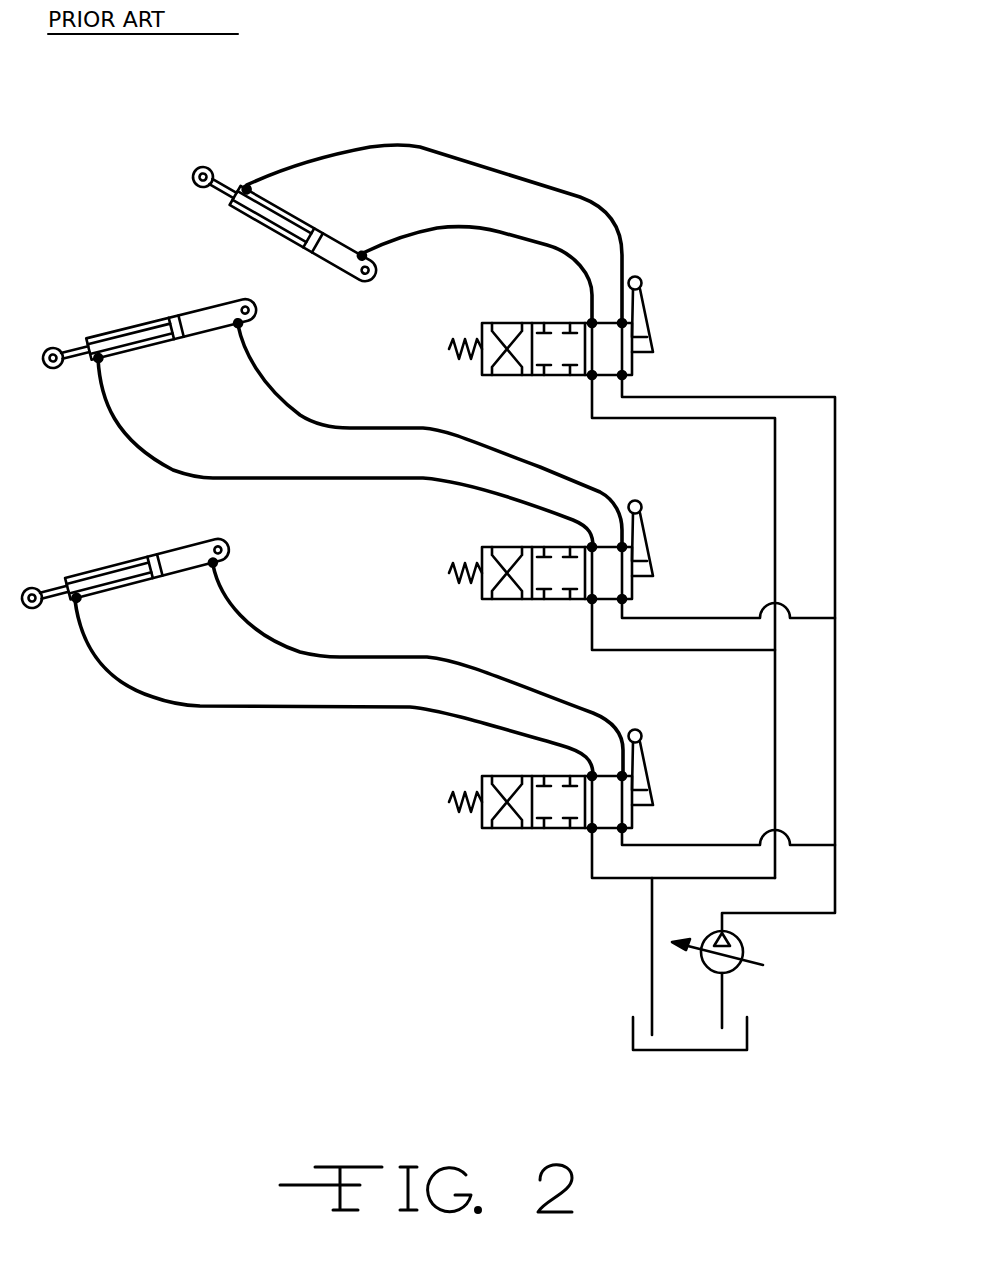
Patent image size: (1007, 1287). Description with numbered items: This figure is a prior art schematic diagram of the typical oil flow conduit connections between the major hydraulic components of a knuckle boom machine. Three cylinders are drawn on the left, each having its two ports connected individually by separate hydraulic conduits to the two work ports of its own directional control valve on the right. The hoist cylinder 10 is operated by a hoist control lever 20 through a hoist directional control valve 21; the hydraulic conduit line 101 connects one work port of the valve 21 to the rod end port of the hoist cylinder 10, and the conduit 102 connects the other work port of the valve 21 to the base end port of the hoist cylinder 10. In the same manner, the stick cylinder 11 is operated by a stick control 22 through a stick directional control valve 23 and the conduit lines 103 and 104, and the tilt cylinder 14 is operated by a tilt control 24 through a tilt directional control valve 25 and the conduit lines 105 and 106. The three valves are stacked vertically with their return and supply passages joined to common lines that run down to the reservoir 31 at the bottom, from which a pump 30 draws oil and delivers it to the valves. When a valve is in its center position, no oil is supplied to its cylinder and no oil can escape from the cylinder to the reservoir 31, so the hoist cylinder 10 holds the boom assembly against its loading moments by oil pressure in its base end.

The hoist cylinder 10 is at (313, 250).
The stick cylinder 11 is at (158, 320).
The tilt cylinder 14 is at (178, 547).
The hoist control lever 20 is at (645, 312).
The hoist directional control valve 21 is at (547, 375).
The stick control 22 is at (647, 530).
The stick directional control valve 23 is at (547, 599).
The tilt control 24 is at (650, 772).
The tilt directional control valve 25 is at (533, 830).
The hydraulic pump 30 is at (733, 970).
The reservoir 31 is at (630, 1030).
The hydraulic conduit line 101 is at (503, 170).
The conduit 102 is at (497, 235).
The conduit line 103 is at (357, 428).
The conduit line 104 is at (350, 480).
The conduit line 105 is at (380, 653).
The conduit line 106 is at (337, 717).